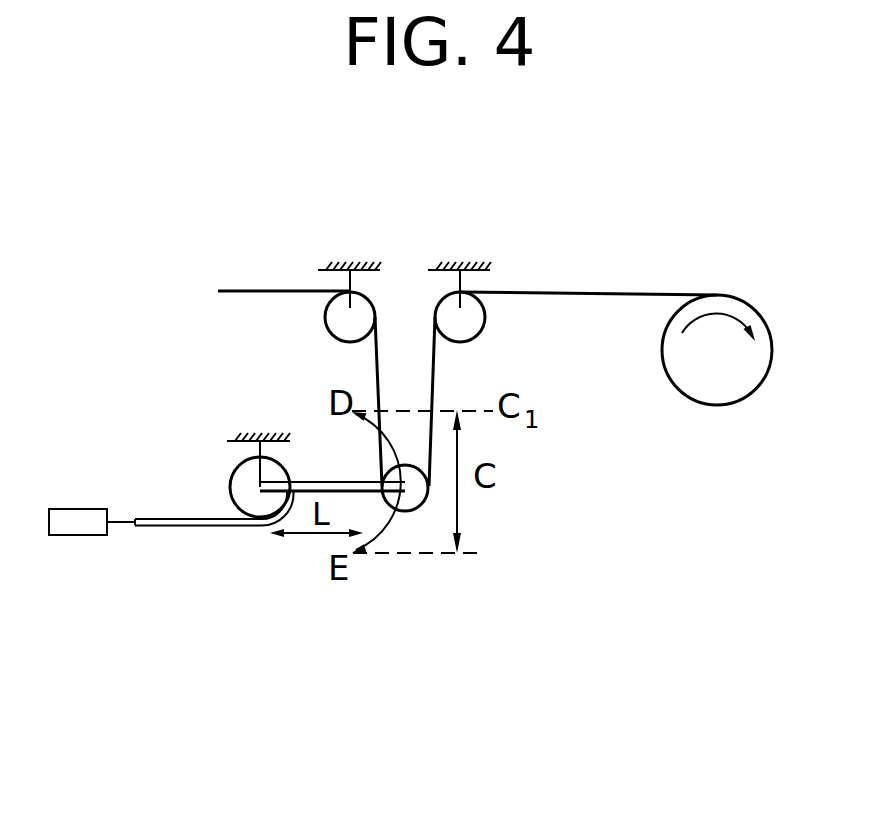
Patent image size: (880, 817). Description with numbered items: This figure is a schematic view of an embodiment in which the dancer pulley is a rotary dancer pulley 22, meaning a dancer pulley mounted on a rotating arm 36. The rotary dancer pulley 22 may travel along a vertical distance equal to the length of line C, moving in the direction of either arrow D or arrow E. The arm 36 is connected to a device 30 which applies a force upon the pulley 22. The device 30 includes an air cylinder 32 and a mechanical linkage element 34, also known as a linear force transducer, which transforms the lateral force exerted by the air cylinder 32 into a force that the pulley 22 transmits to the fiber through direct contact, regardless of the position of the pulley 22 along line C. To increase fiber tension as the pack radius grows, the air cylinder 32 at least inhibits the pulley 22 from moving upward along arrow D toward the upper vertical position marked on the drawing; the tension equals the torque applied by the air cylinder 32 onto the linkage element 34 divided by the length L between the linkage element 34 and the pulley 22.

The rotary dancer pulley 22 is at (418, 508).
The device 30 is at (143, 547).
The air cylinder 32 is at (83, 535).
The mechanical linkage element 34 is at (240, 487).
The rotating arm 36 is at (320, 482).